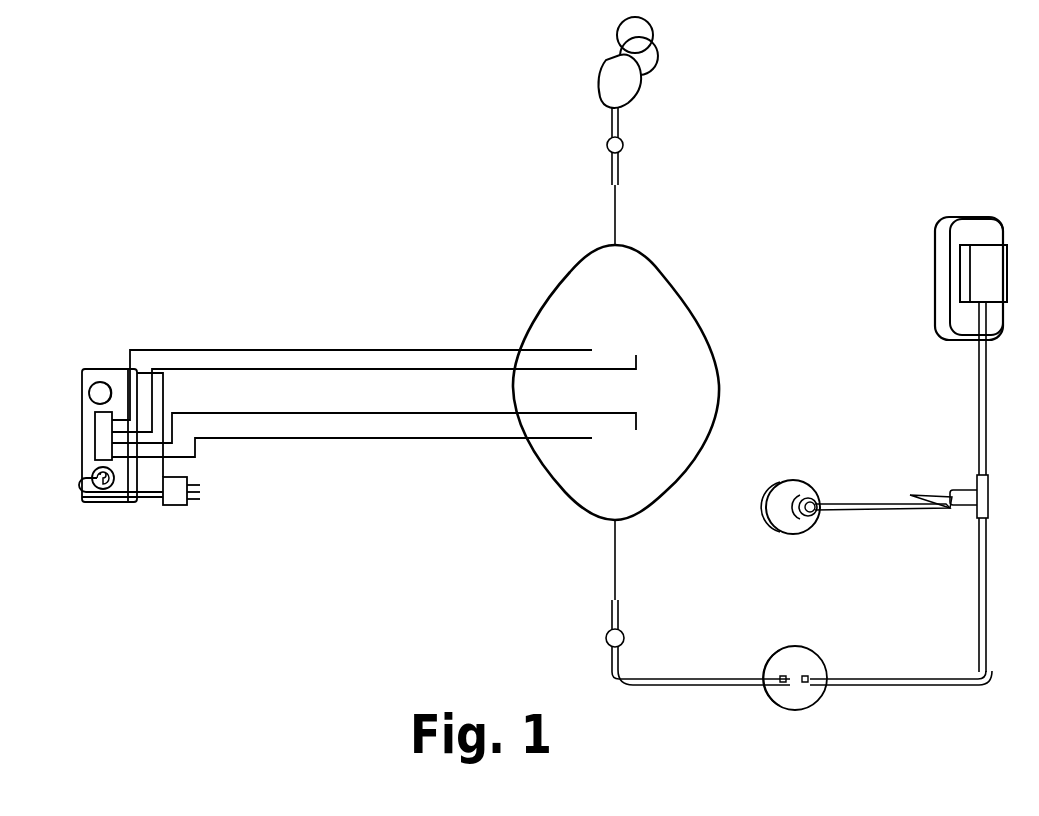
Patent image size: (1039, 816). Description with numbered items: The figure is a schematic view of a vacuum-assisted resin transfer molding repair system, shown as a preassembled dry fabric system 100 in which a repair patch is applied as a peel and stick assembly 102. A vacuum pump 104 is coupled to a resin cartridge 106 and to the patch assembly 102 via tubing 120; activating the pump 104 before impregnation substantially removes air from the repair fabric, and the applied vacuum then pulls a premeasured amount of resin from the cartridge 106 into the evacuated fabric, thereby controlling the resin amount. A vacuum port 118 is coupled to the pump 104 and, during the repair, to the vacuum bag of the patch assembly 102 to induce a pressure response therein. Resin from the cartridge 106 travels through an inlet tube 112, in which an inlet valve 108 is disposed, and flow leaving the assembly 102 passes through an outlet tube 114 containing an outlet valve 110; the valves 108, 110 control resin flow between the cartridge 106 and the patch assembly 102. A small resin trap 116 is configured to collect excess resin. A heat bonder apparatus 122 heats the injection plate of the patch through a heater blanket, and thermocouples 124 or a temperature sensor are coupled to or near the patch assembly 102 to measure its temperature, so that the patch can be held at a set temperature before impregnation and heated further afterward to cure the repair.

The preassembled dry fabric system 100 is at (158, 143).
The peel and stick assembly 102 is at (663, 312).
The vacuum pump 104 is at (970, 217).
The resin cartridge 106 is at (645, 64).
The inlet valve 108 is at (606, 140).
The outlet valve 110 is at (606, 636).
The inlet tube 112 is at (613, 210).
The outlet tube 114 is at (615, 550).
The resin trap 116 is at (790, 655).
The vacuum port 118 is at (800, 482).
The tubing 120 is at (979, 400).
The heat bonder apparatus 122 is at (85, 368).
The thermocouples 124 is at (300, 350).